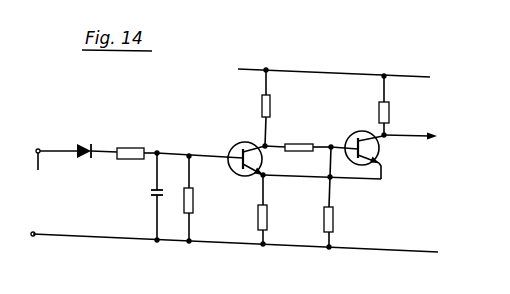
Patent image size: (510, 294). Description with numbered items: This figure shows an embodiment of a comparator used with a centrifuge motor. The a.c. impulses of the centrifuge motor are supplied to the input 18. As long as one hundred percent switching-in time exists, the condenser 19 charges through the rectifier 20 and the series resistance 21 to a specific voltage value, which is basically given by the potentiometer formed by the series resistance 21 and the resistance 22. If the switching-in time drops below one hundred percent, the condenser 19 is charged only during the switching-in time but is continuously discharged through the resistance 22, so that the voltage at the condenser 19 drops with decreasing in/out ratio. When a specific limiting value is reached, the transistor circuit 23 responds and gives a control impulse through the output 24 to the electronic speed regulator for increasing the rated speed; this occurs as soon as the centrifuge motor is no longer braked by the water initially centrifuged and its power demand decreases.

The input 18 is at (53, 168).
The condenser 19 is at (189, 196).
The rectifier 20 is at (97, 144).
The series resistance 21 is at (137, 148).
The resistance 22 is at (198, 198).
The transistor circuit 23 is at (298, 141).
The output 24 is at (410, 130).